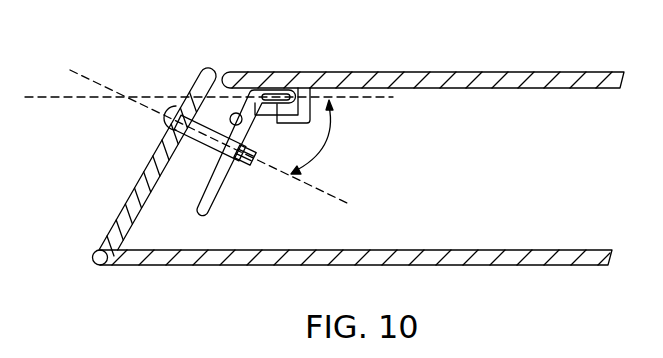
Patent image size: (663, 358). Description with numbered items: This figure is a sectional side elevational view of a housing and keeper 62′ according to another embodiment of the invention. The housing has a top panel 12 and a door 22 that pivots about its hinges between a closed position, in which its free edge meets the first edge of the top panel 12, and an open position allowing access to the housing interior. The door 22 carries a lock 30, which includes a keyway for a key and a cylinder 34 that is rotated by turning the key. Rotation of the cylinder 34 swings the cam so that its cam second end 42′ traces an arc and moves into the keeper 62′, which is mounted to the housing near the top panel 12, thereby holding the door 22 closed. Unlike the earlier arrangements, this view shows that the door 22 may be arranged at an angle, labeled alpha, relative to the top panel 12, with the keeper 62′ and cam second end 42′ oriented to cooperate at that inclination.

The top panel 12 is at (422, 72).
The door 22 is at (122, 210).
The lock 30 is at (154, 126).
The cylinder 34 is at (195, 148).
The cam second end 42′ is at (279, 93).
The keeper 62′ is at (291, 121).